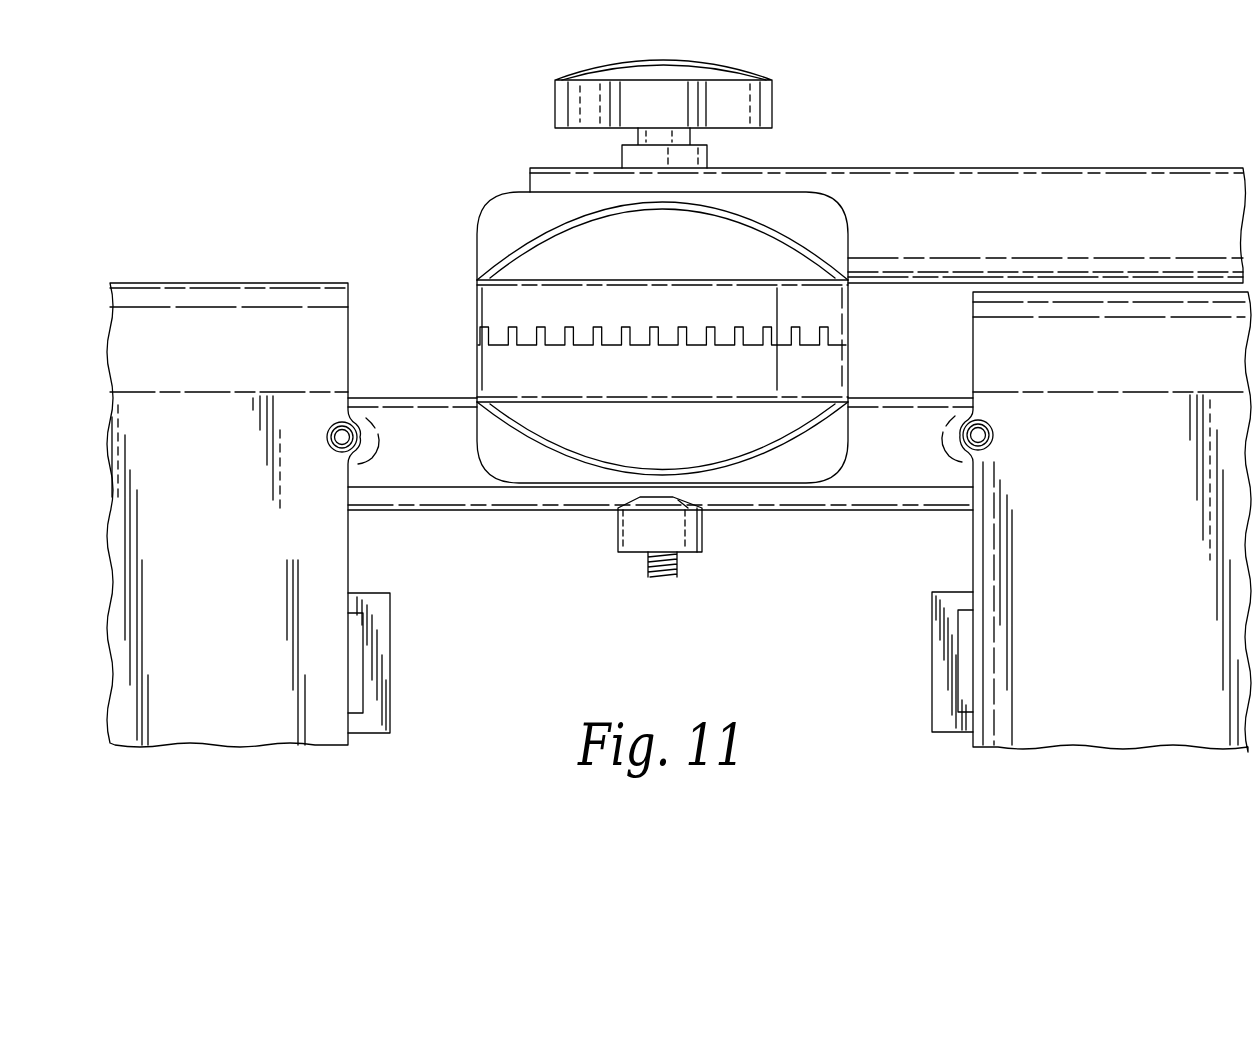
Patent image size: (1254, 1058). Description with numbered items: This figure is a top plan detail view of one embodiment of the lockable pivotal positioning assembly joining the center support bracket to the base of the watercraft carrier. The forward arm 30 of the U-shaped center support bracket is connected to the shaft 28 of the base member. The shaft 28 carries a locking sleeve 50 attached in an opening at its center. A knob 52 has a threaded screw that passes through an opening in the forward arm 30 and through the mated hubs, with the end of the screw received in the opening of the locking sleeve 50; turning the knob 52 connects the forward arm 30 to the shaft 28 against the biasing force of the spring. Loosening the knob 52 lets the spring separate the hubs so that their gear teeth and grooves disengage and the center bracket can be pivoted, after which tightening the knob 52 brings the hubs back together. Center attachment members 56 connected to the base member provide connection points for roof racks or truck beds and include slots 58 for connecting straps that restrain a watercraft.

The shaft 28 is at (408, 420).
The forward arm 30 is at (920, 182).
The locking sleeve 50 is at (640, 542).
The knob 52 is at (733, 78).
The center attachment member 56 is at (973, 554).
The slot 58 is at (938, 705).